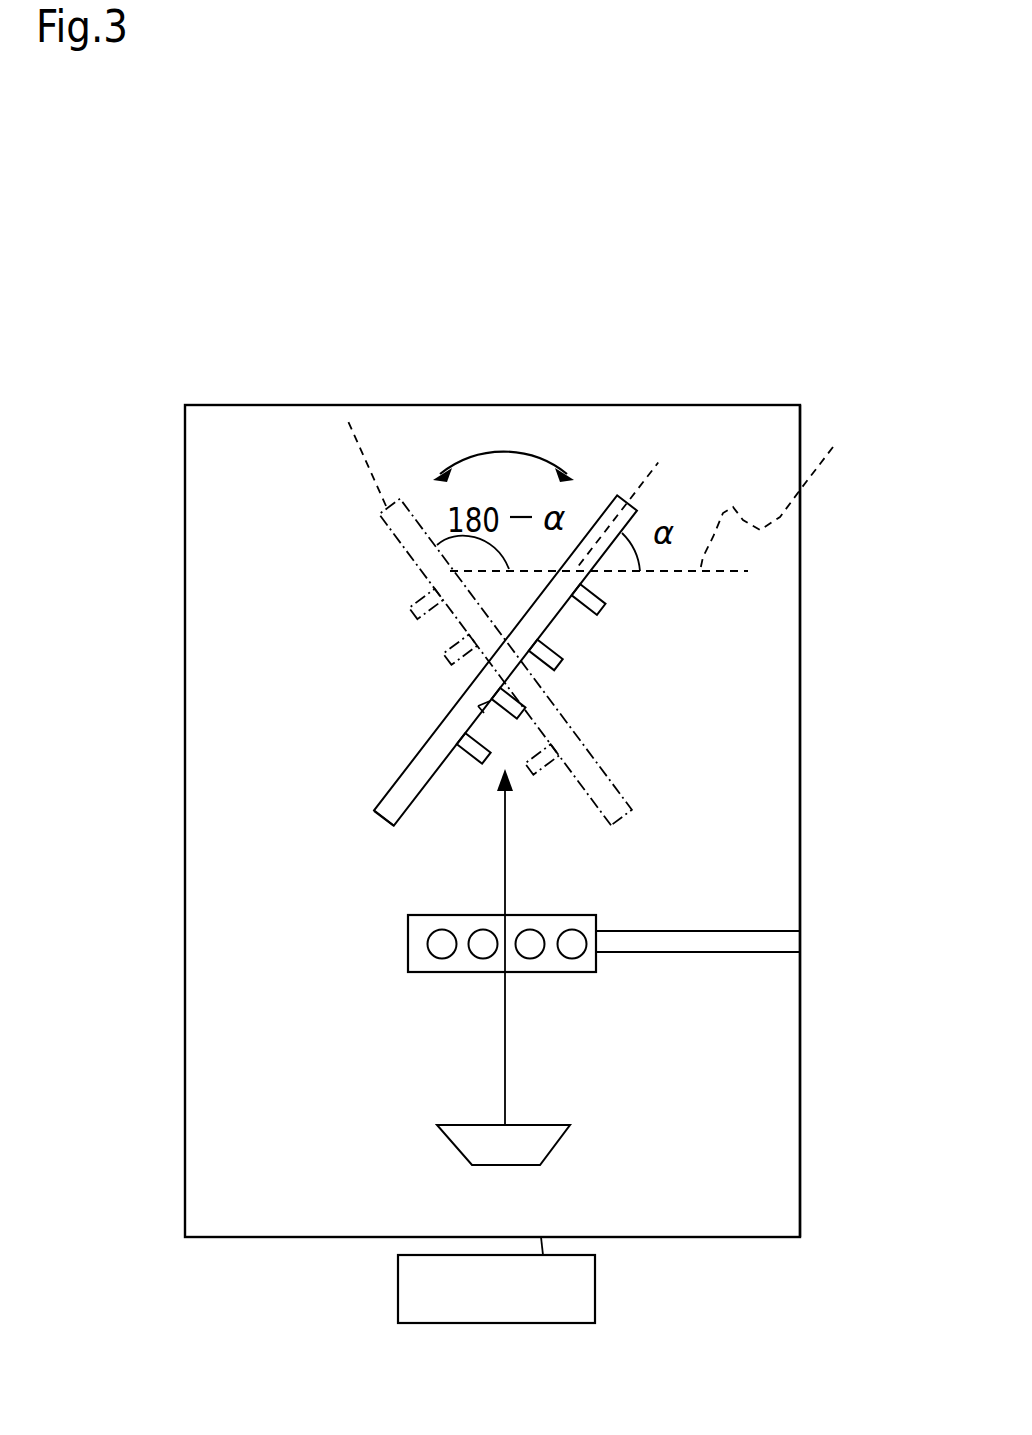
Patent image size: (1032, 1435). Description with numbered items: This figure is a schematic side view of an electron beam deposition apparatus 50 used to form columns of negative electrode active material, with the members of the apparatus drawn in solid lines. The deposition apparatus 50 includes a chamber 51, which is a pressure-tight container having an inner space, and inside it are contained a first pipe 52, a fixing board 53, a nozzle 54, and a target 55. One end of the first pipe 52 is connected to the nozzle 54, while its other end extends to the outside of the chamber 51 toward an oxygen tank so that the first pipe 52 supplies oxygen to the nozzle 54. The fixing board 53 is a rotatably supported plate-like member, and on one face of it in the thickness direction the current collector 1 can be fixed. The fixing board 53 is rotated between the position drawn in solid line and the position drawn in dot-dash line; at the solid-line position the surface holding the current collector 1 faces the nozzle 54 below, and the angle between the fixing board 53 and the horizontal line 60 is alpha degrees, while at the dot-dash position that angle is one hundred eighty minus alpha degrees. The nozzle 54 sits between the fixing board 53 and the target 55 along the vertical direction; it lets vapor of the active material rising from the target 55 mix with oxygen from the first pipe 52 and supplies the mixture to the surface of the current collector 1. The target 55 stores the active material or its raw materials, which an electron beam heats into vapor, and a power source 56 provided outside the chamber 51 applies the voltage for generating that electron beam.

The electron beam deposition apparatus 50 is at (163, 195).
The chamber 51 is at (803, 562).
The first pipe 52 is at (733, 947).
The fixing board 53 is at (613, 510).
The nozzle 54 is at (557, 972).
The target 55 is at (513, 1145).
The power source 56 is at (440, 1290).
The horizontal line 60 is at (784, 493).
The current collector 1 is at (400, 822).